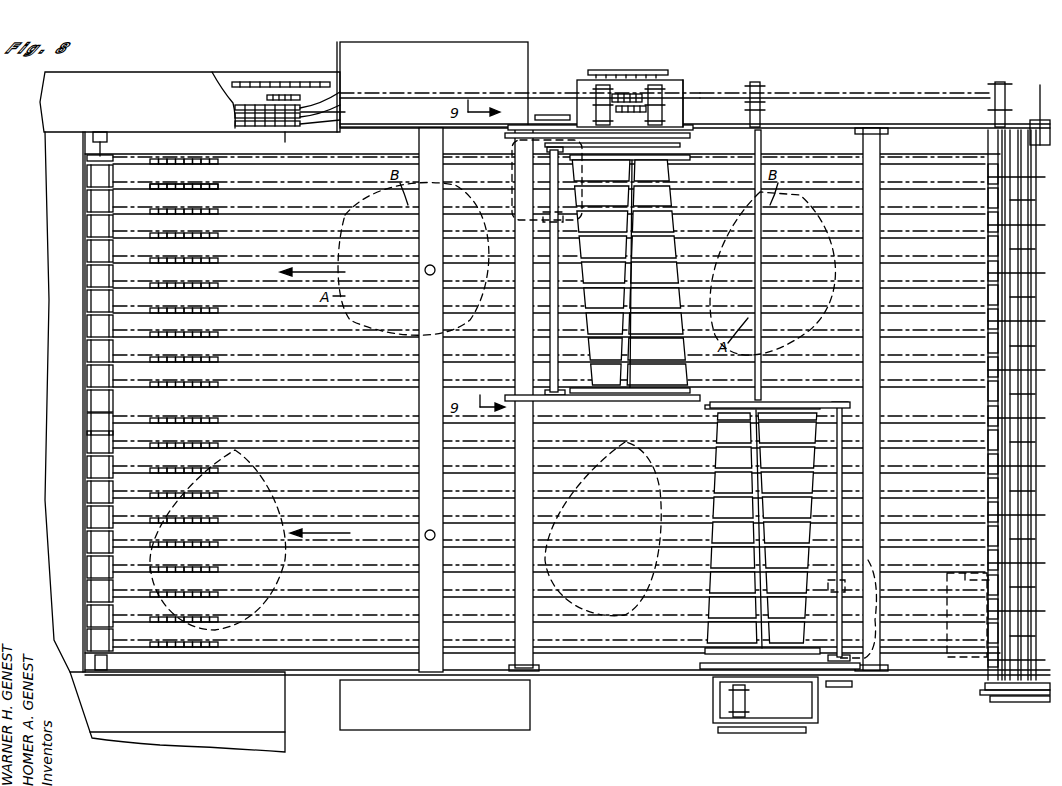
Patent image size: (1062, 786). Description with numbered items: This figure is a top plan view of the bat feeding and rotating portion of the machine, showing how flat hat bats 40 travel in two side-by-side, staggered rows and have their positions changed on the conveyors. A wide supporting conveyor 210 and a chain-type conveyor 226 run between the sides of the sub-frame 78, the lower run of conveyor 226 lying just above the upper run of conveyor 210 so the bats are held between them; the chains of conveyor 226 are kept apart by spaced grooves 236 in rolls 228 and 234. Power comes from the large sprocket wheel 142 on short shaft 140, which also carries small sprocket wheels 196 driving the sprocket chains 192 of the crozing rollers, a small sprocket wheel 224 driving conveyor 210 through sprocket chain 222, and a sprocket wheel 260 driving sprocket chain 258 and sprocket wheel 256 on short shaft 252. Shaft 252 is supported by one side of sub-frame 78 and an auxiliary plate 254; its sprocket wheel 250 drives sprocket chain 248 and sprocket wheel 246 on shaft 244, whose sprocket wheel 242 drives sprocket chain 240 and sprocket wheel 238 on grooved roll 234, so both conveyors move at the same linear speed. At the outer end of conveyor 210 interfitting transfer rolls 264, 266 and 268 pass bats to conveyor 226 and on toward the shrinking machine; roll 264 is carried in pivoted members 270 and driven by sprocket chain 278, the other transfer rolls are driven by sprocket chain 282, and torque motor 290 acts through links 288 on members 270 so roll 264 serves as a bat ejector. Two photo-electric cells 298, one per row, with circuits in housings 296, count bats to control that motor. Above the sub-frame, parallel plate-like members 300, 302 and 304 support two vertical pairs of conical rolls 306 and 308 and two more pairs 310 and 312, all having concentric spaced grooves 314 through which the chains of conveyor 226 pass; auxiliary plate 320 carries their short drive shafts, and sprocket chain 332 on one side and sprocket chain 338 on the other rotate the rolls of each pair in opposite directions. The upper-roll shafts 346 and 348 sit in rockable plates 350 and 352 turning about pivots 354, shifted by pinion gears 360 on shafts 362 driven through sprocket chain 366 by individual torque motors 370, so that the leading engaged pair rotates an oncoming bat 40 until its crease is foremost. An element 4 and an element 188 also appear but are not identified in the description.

The supporting table 4 is at (50, 87).
The hat bat 40 is at (345, 250).
The sub-frame 78 is at (830, 125).
The short shaft 140 is at (280, 95).
The large sprocket wheel 142 is at (246, 82).
The base housing 188 is at (145, 738).
The sprocket chains 192 is at (235, 116).
The small sprocket wheels 196 is at (340, 113).
The supporting conveyor 210 is at (235, 655).
The sprocket chain 222 is at (216, 72).
The small sprocket wheel 224 is at (340, 92).
The conveyor 226 is at (155, 190).
The roll 228 is at (90, 180).
The grooved conveyor roll 234 is at (988, 199).
The spaced grooves 236 is at (90, 262).
The sprocket wheel 238 is at (995, 90).
The sprocket chain 240 is at (870, 93).
The sprocket wheel 242 is at (762, 98).
The shaft 244 is at (762, 144).
The sprocket wheel 246 is at (748, 100).
The sprocket chain 248 is at (688, 120).
The sprocket wheel 250 is at (646, 108).
The short horizontally mounted shaft 252 is at (622, 94).
The auxiliary plate 254 is at (577, 83).
The sprocket wheel 256 is at (655, 85).
The sprocket chain 258 is at (432, 93).
The sprocket wheel 260 is at (335, 92).
The transfer roll 264 is at (1025, 295).
The transfer roll 266 is at (1010, 250).
The transfer roll 268 is at (988, 178).
The members 270 is at (1040, 100).
The sprocket chain 278 is at (990, 686).
The sprocket chain 282 is at (995, 700).
The links 288 is at (1038, 122).
The torque motor 290 is at (947, 588).
The housings 296 is at (384, 50).
The photo-electric cells 298 is at (425, 272).
The plate-like member 300 is at (715, 683).
The plate-like member 302 is at (522, 415).
The plate-like member 304 is at (512, 139).
The conical rolls 306 is at (718, 484).
The conical rolls 308 is at (810, 458).
The conical rolls 310 is at (600, 350).
The conical rolls 312 is at (668, 248).
The concentric spaced grooves 314 is at (672, 218).
The auxiliary plate 320 is at (720, 712).
The sprocket chain 332 is at (590, 72).
The sprocket chain 338 is at (718, 731).
The shaft 346 is at (596, 160).
The shaft 348 is at (682, 145).
The rockable plate 350 is at (680, 126).
The rockable plate 352 is at (665, 403).
The pivot 354 is at (625, 403).
The pinion gears 360 is at (545, 152).
The shafts 362 is at (550, 270).
The sprocket chain 366 is at (545, 115).
The torque motor 370 is at (512, 215).